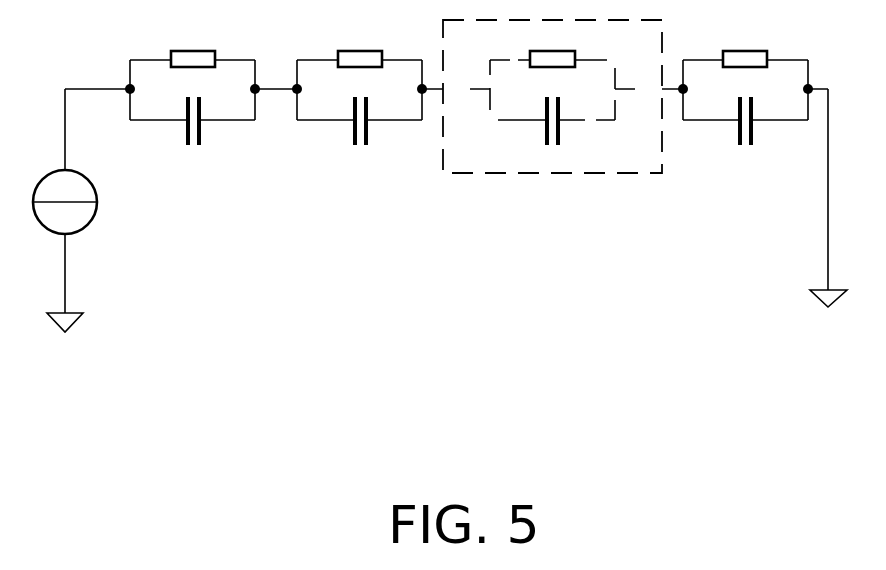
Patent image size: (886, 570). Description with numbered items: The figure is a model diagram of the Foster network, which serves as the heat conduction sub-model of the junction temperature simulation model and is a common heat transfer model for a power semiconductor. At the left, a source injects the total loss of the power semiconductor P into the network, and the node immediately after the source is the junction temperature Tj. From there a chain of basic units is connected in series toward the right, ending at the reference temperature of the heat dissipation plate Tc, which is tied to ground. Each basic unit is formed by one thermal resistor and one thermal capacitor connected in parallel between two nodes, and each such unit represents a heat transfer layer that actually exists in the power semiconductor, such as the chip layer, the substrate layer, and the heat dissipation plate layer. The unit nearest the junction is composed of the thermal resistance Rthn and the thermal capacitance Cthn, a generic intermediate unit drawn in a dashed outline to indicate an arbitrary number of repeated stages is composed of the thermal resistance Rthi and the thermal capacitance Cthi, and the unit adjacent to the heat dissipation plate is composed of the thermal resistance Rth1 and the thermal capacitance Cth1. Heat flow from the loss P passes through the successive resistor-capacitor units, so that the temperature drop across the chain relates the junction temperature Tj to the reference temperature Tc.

The total loss of the power semiconductor P is at (53, 202).
The junction temperature Tj is at (111, 80).
The reference temperature of the heat dissipation plate Tc is at (829, 89).
The thermal resistance Rthn is at (196, 44).
The thermal capacitance Cthn is at (197, 134).
The thermal resistance Rthi is at (553, 43).
The thermal capacitance Cthi is at (555, 134).
The thermal resistance Rth1 is at (748, 43).
The thermal capacitance Cth1 is at (749, 134).